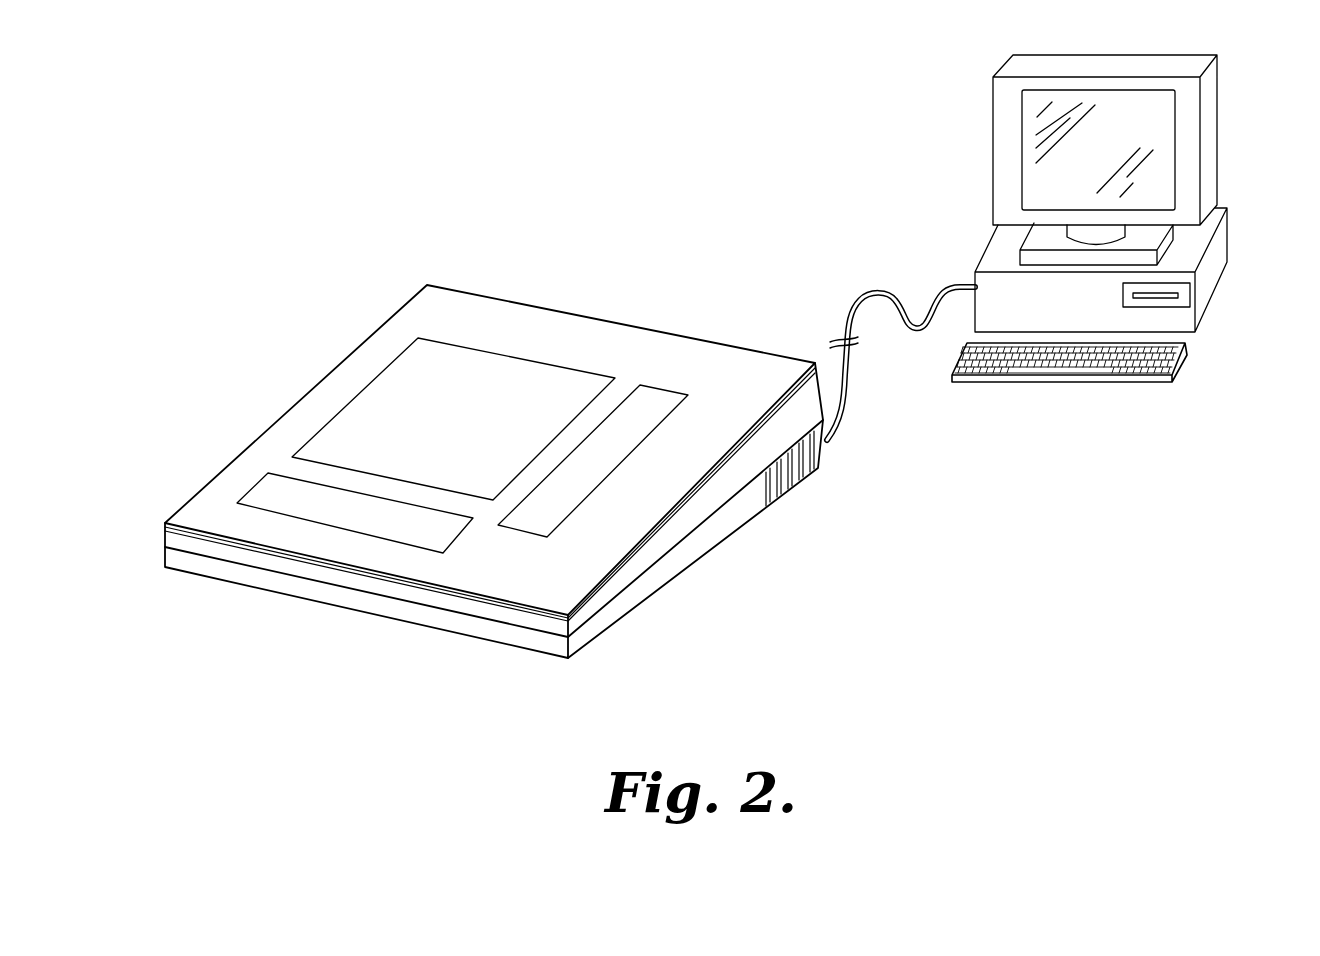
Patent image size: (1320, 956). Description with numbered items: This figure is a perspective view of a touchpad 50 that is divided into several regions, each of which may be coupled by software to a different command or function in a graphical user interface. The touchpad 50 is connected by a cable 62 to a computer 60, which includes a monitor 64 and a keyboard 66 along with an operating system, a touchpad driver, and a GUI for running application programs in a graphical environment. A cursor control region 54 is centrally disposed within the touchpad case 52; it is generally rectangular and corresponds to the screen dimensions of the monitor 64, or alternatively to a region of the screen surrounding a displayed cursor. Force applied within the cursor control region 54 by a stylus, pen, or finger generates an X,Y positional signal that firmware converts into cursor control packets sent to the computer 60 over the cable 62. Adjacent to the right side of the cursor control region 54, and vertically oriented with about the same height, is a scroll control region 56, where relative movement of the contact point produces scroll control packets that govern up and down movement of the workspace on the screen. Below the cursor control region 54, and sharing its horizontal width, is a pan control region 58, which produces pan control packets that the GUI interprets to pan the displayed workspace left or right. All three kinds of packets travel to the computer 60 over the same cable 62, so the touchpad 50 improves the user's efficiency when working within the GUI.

The touchpad 50 is at (488, 403).
The touchpad case 52 is at (552, 330).
The cursor control region 54 is at (370, 402).
The scroll control region 56 is at (648, 400).
The pan control region 58 is at (265, 493).
The computer 60 is at (1217, 277).
The cable 62 is at (866, 293).
The monitor 64 is at (1210, 122).
The keyboard 66 is at (1162, 380).